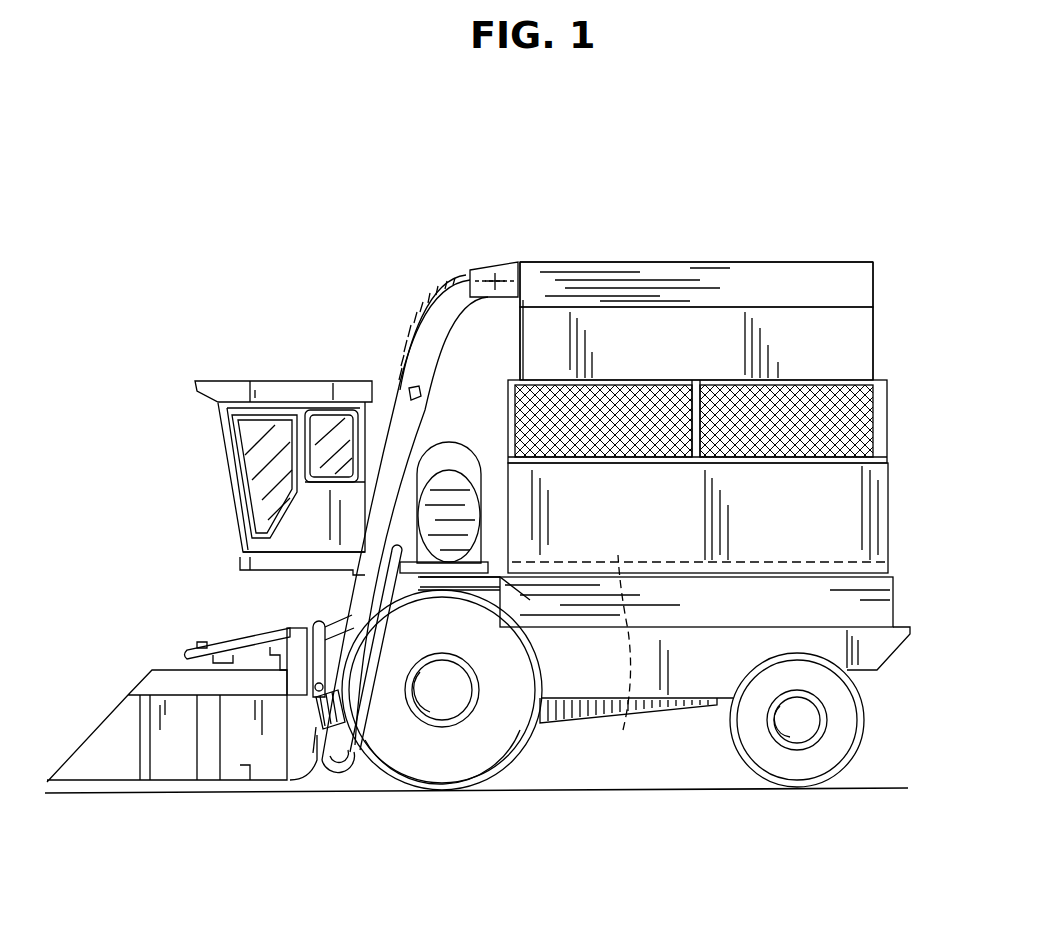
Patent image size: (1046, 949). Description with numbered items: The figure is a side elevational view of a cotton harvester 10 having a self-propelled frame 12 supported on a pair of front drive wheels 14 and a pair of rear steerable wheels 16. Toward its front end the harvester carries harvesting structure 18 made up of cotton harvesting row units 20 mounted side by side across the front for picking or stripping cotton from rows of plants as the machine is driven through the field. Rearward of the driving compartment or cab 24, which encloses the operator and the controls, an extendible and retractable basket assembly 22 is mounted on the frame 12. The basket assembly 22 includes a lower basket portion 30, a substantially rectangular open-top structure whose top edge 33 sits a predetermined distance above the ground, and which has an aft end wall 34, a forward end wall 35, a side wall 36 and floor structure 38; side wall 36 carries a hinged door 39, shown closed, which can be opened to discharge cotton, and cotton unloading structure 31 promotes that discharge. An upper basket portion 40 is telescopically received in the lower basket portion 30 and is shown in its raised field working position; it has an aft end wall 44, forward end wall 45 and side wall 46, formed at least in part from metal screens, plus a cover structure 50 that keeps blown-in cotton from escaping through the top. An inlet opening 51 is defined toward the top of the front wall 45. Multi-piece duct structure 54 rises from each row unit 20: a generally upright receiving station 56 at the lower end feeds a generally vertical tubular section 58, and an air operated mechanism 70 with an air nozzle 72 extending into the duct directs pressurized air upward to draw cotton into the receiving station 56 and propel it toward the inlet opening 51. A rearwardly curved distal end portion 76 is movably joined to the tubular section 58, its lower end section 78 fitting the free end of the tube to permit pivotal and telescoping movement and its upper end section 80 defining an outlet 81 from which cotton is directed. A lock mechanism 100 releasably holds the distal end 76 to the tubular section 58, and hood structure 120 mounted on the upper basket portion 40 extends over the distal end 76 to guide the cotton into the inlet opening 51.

The cotton harvester 10 is at (352, 222).
The frame 12 is at (880, 650).
The front drive wheels 14 is at (500, 768).
The rear steerable wheels 16 is at (800, 775).
The harvesting structure 18 is at (125, 645).
The cotton harvesting row units 20 is at (238, 762).
The basket assembly 22 is at (890, 302).
The cab 24 is at (245, 456).
The lower basket portion 30 is at (855, 512).
The cotton unloading structure 31 is at (617, 658).
The top edge 33 is at (627, 380).
The aft end wall 34 is at (890, 480).
The forward end wall 35 is at (510, 422).
The side wall 36 is at (885, 415).
The floor structure 38 is at (835, 565).
The door 39 is at (642, 502).
The upper basket portion 40 is at (835, 370).
The aft end wall 44 is at (875, 264).
The forward end wall 45 is at (520, 362).
The side wall 46 is at (843, 342).
The cover structure 50 is at (738, 262).
The inlet opening 51 is at (548, 263).
The duct structure 54 is at (380, 368).
The receiving station 56 is at (298, 720).
The tubular section 58 is at (428, 446).
The air operated mechanism 70 is at (368, 790).
The air nozzle 72 is at (336, 778).
The distal end portion 76 is at (438, 290).
The lower end section 78 is at (446, 402).
The upper end section 80 is at (462, 294).
The outlet 81 is at (516, 258).
The lock mechanism 100 is at (408, 370).
The hood structure 120 is at (490, 250).